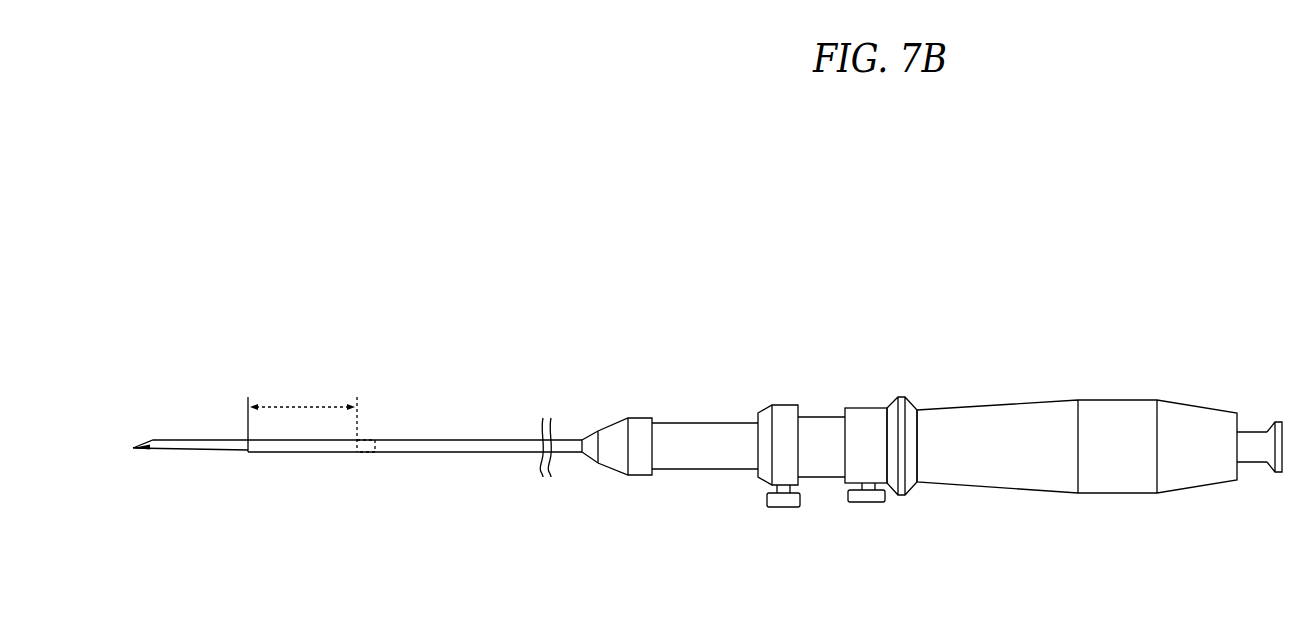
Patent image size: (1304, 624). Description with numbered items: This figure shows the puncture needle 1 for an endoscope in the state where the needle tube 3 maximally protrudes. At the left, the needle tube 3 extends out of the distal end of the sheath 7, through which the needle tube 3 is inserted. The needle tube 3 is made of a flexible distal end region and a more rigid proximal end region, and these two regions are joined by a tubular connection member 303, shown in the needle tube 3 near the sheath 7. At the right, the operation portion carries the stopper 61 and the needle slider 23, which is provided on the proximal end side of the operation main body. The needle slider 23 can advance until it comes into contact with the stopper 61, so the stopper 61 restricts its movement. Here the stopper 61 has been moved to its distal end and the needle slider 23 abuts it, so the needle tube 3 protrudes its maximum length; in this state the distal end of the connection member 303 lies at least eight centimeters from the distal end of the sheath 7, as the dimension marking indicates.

The puncture needle 1 is at (820, 292).
The needle tube 3 is at (168, 445).
The sheath 7 is at (302, 453).
The needle slider 23 is at (1114, 408).
The stopper 61 is at (870, 408).
The connection member 303 is at (365, 453).